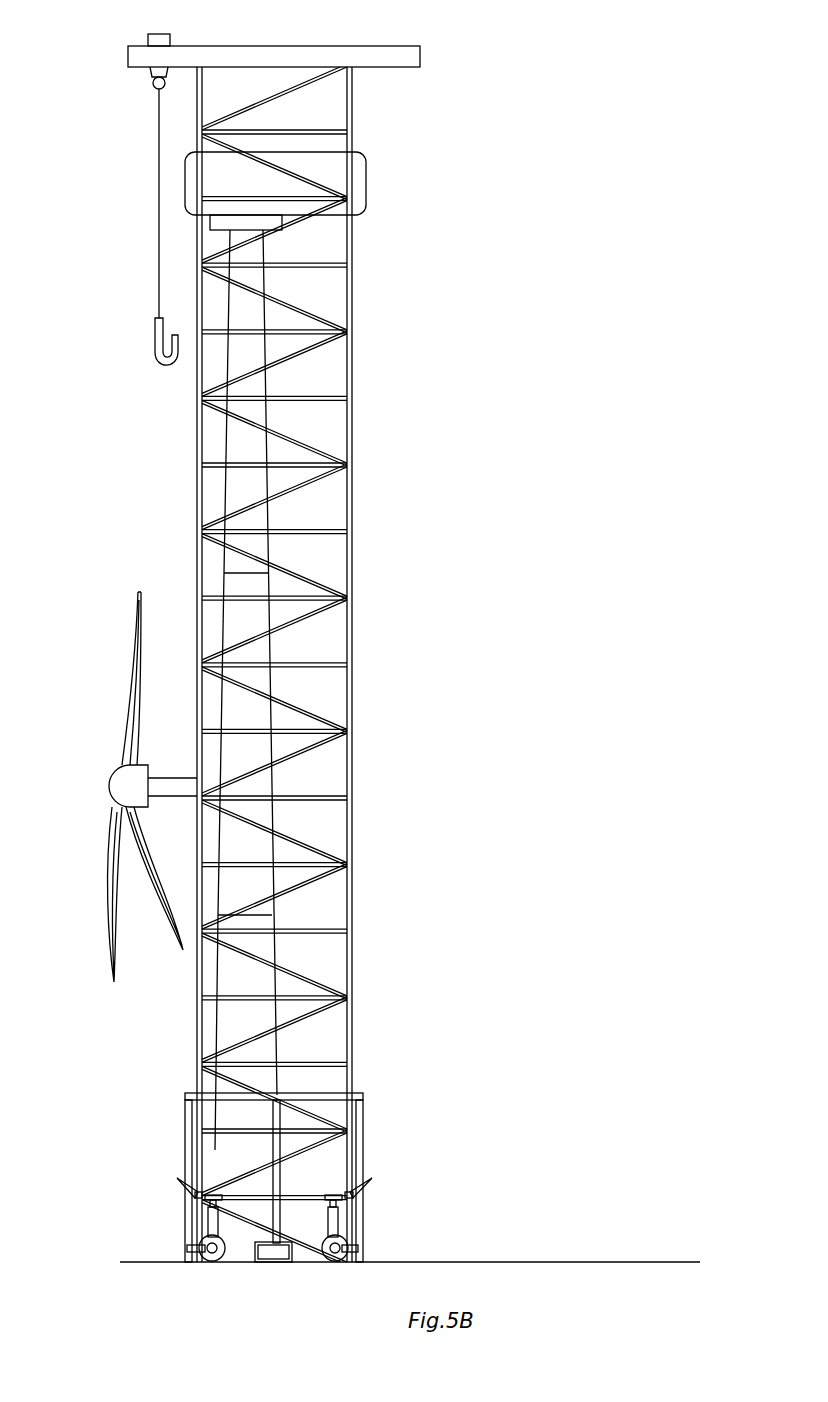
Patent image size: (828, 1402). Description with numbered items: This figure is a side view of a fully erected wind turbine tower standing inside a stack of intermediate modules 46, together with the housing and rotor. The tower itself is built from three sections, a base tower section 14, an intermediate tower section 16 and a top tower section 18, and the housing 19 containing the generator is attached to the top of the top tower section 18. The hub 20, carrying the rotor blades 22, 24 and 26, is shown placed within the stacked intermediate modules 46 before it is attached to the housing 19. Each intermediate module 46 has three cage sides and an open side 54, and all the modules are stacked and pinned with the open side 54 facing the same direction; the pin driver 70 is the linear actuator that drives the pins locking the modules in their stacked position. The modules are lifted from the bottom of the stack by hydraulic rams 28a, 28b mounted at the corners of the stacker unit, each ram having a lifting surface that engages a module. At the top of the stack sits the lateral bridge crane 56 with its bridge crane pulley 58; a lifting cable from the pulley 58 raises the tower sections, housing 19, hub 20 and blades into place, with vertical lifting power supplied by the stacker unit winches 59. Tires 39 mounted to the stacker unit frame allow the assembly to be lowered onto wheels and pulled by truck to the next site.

The base tower section 14 is at (222, 978).
The intermediate tower section 16 is at (225, 708).
The top tower section 18 is at (230, 441).
The housing 19 is at (366, 166).
The hub 20 is at (105, 782).
The rotor blade 22 is at (135, 682).
The rotor blade 24 is at (110, 888).
The rotor blade 26 is at (172, 940).
The hydraulic ram 28a is at (340, 1226).
The hydraulic ram 28b is at (208, 1225).
The tires 39 is at (207, 1262).
The intermediate module 46 is at (355, 300).
The open side 54 is at (383, 1114).
The bridge crane 56 is at (412, 54).
The bridge crane pulley 58 is at (160, 33).
The stacker unit winch 59 is at (265, 1262).
The pin driver 70 is at (195, 1192).